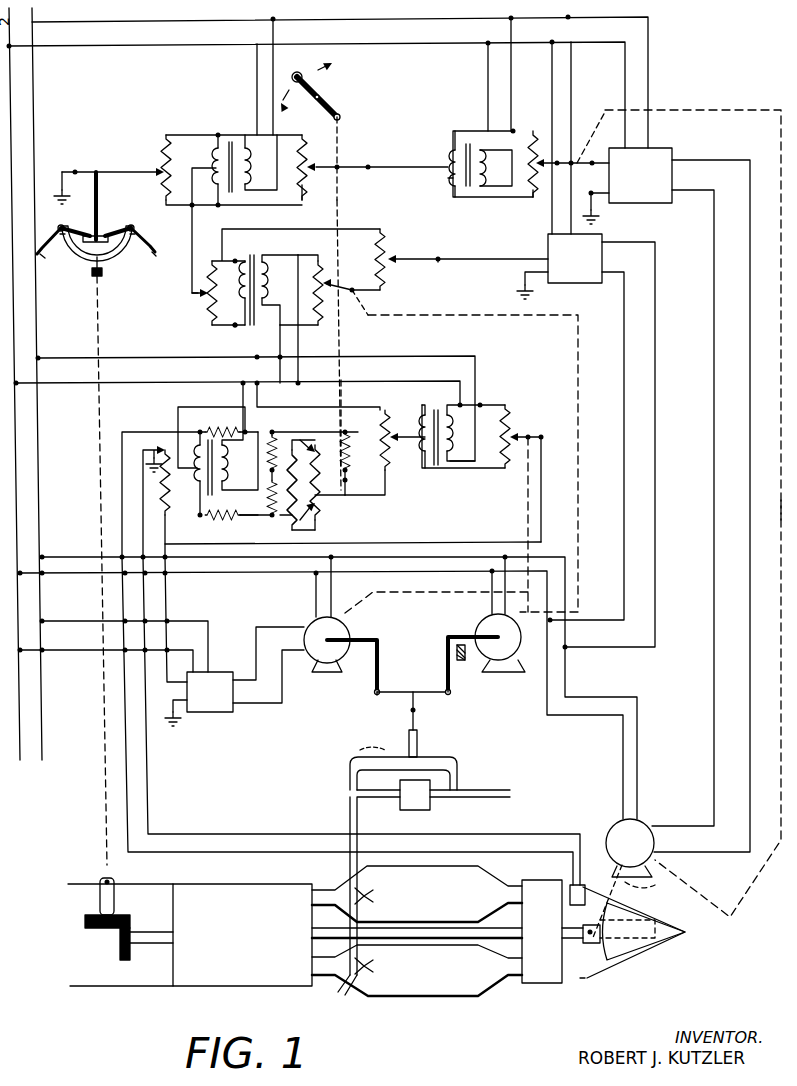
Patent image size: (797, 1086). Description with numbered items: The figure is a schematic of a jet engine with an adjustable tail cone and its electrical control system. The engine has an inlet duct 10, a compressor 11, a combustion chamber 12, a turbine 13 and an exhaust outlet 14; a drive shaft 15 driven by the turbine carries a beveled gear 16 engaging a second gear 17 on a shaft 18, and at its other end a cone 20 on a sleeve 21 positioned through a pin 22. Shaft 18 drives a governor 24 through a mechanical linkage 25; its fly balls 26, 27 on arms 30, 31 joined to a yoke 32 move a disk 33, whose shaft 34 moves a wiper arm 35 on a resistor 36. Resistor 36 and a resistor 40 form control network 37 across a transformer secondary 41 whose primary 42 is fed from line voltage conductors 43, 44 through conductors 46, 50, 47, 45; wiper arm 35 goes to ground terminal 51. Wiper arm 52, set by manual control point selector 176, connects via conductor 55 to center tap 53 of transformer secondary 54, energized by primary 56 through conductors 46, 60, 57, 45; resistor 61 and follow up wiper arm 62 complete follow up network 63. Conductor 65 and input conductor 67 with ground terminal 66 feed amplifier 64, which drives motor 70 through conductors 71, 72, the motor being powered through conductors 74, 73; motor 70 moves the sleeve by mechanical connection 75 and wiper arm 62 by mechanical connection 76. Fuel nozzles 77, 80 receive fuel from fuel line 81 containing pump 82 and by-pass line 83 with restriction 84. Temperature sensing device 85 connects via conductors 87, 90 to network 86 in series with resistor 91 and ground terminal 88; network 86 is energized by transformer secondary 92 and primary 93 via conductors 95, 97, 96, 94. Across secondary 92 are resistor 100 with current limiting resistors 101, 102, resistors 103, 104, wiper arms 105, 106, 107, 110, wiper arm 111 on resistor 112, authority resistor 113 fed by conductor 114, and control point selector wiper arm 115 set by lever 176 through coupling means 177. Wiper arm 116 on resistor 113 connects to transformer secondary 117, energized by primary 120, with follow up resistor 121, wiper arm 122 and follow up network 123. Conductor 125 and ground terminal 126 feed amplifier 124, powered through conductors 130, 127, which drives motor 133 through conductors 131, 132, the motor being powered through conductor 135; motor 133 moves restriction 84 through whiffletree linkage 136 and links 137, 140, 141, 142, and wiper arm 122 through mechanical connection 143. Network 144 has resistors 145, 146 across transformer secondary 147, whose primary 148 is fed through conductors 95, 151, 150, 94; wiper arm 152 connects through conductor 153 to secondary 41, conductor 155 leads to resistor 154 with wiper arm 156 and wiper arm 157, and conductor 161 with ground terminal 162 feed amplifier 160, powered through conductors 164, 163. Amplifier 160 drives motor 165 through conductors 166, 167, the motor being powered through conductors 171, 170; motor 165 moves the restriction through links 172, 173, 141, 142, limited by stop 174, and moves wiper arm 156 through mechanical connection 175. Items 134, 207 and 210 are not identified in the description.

The inlet duct 10 is at (110, 986).
The compressor 11 is at (232, 986).
The combustion chamber 12 is at (440, 886).
The turbine 13 is at (536, 984).
The exhaust outlet 14 is at (618, 964).
The drive shaft 15 is at (458, 936).
The beveled gear 16 is at (120, 943).
The second gear 17 is at (84, 922).
The shaft 18 is at (100, 901).
The tail cone 20 is at (685, 932).
The sleeve 21 is at (583, 978).
The pin 22 is at (590, 943).
The governor 24 is at (97, 271).
The mechanical linkage 25 is at (98, 474).
The fly ball 26 is at (44, 252).
The fly ball 27 is at (150, 252).
The arm 30 is at (66, 222).
The arm 31 is at (130, 222).
The yoke 32 is at (106, 268).
The disk 33 is at (100, 227).
The shaft 34 is at (98, 195).
The wiper arm 35 is at (115, 172).
The resistor 36 is at (160, 142).
The control network 37 is at (234, 150).
The resistor 40 is at (313, 167).
The transformer secondary 41 is at (212, 158).
The transformer primary 42 is at (258, 189).
The line voltage conductor 43 is at (13, 89).
The line voltage conductor 44 is at (35, 113).
The conductor 45 is at (103, 22).
The conductor 46 is at (67, 46).
The conductor 47 is at (291, 120).
The conductor 50 is at (254, 66).
The ground terminal 51 is at (54, 165).
The wiper arm 52 is at (308, 178).
The center tap 53 is at (450, 176).
The transformer secondary 54 is at (448, 154).
The conductor 55 is at (392, 167).
The transformer primary 56 is at (496, 168).
The conductor 57 is at (511, 63).
The conductor 60 is at (487, 98).
The resistor 61 is at (535, 146).
The follow up wiper arm 62 is at (535, 180).
The follow up network 63 is at (493, 175).
The amplifier 64 is at (693, 505).
The conductor 65 is at (598, 158).
The ground terminal 66 is at (596, 214).
The input conductor 67 is at (594, 188).
The motor 70 is at (617, 838).
The conductor 71 is at (708, 222).
The conductor 72 is at (750, 256).
The conductor 73 is at (218, 558).
The conductor 74 is at (194, 573).
The mechanical connection 75 is at (620, 882).
The mechanical connection 76 is at (781, 510).
The fuel nozzle 77 is at (360, 890).
The fuel nozzle 80 is at (350, 992).
The fuel line 81 is at (492, 790).
The pump 82 is at (422, 812).
The by-pass line 83 is at (444, 757).
The restriction 84 is at (366, 750).
The temperature sensing device 85 is at (584, 884).
The network 86 is at (213, 473).
The conductor 87 is at (126, 778).
The ground terminal 88 is at (154, 446).
The conductor 90 is at (150, 764).
The resistor 91 is at (154, 495).
The transformer secondary 92 is at (190, 492).
The transformer primary 93 is at (228, 472).
The conductor 94 is at (122, 358).
The conductor 95 is at (108, 383).
The conductor 96 is at (264, 402).
The conductor 97 is at (242, 396).
The resistor 100 is at (318, 490).
The current limiting resistor 101 is at (220, 431).
The current limiting resistor 102 is at (204, 516).
The resistor 103 is at (244, 461).
The resistor 104 is at (272, 487).
The wiper arm 105 is at (325, 428).
The wiper arm 106 is at (302, 514).
The wiper arm 107 is at (300, 440).
The wiper arm 110 is at (284, 515).
The wiper arm 111 is at (288, 485).
The resistor 112 is at (359, 463).
The authority resistor 113 is at (386, 404).
The conductor 114 is at (341, 400).
The control point selector wiper arm 115 is at (347, 487).
The wiper arm 116 is at (402, 442).
The transformer secondary 117 is at (424, 418).
The transformer primary 120 is at (452, 456).
The follow up resistor 121 is at (510, 412).
The wiper arm 122 is at (528, 434).
The follow up network 123 is at (469, 451).
The amplifier 124 is at (201, 646).
The conductor 125 is at (423, 542).
The ground terminal 126 is at (182, 726).
The conductor 127 is at (78, 618).
The conductor 130 is at (58, 650).
The conductor 131 is at (256, 640).
The conductor 132 is at (286, 694).
The motor 133 is at (298, 633).
The conductor 134 is at (334, 588).
The conductor 135 is at (304, 585).
The whiffletree linkage 136 is at (412, 666).
The link 137 is at (360, 624).
The link 140 is at (374, 692).
The link 141 is at (410, 714).
The link 142 is at (416, 710).
The mechanical connection 143 is at (412, 591).
The network 144 is at (296, 278).
The resistor 145 is at (208, 318).
The resistor 146 is at (339, 318).
The transformer secondary 147 is at (234, 326).
The transformer primary 148 is at (270, 266).
The conductor 150 is at (278, 342).
The conductor 151 is at (299, 338).
The wiper arm 152 is at (192, 293).
The conductor 153 is at (194, 232).
The resistor 154 is at (382, 247).
The conductor 155 is at (346, 218).
The wiper arm 156 is at (350, 286).
The wiper arm 157 is at (428, 259).
The amplifier 160 is at (575, 270).
The conductor 161 is at (484, 258).
The ground terminal 162 is at (525, 287).
The conductor 163 is at (574, 108).
The conductor 164 is at (548, 104).
The motor 165 is at (509, 651).
The conductor 166 is at (624, 380).
The conductor 167 is at (655, 342).
The conductor 170 is at (506, 599).
The conductor 171 is at (492, 603).
The link 172 is at (460, 632).
The link 173 is at (451, 692).
The stop 174 is at (460, 660).
The mechanical connection 175 is at (584, 474).
The manual control point selector 176 is at (331, 95).
The coupling means 177 is at (333, 202).
The resistor 207 is at (276, 435).
The conductor 210 is at (246, 515).